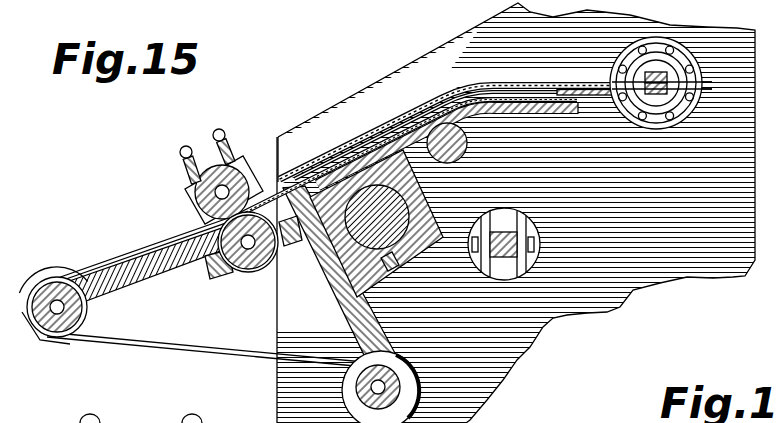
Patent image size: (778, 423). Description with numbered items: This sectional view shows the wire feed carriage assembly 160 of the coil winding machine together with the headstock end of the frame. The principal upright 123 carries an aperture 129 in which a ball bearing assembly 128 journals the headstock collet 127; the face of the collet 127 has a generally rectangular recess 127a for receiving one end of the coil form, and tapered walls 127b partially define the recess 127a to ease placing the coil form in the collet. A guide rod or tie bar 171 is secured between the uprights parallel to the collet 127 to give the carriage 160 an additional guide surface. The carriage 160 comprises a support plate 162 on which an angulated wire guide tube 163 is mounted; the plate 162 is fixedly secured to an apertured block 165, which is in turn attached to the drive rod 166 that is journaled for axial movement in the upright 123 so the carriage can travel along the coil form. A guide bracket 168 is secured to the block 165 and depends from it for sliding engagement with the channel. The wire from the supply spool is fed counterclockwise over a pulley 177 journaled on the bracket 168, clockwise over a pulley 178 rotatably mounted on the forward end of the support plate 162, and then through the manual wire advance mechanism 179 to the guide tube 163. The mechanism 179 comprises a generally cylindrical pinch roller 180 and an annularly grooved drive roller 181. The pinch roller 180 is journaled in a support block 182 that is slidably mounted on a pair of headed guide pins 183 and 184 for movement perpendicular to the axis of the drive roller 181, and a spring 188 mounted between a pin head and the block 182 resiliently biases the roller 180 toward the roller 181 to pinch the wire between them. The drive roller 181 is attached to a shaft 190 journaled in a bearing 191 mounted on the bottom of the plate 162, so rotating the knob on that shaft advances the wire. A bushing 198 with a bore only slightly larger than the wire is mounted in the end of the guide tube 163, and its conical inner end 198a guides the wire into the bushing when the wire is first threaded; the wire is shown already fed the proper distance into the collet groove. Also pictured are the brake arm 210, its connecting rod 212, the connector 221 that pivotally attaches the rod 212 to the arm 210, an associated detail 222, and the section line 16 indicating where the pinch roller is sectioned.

The section line 16— 16 is at (206, 142).
The upright 123 is at (688, 276).
The headstock collet 127 is at (657, 110).
The rectangular recess 127a is at (673, 78).
The tapered walls 127b is at (667, 102).
The ball bearing assembly 128 is at (629, 116).
The aperture 129 is at (655, 40).
The wire feed carriage assembly 160 is at (91, 144).
The support plate 162 is at (130, 304).
The wire guide tube 163 is at (486, 83).
The apertured block 165 is at (373, 270).
The drive rod 166 is at (395, 202).
The guide bracket 168 is at (386, 327).
The guide rod or tie bar 171 is at (468, 144).
The pulley 177 is at (346, 398).
The pulley 178 is at (45, 267).
The manual wire advance mechanism 179 is at (134, 222).
The pinch roller 180 is at (203, 220).
The drive roller 181 is at (256, 270).
The support block 182 is at (198, 193).
The headed guide pin 183 is at (222, 130).
The headed guide pin 184 is at (203, 413).
The spring 188 is at (233, 150).
The shaft 190 is at (266, 250).
The bearing 191 is at (212, 274).
The bushing 198 is at (593, 82).
The inner end of bushing 198a is at (554, 80).
The brake arm 210 is at (534, 262).
The connecting rod 212 is at (480, 256).
The connector 221 is at (521, 232).
The guide assembly 222 is at (504, 210).